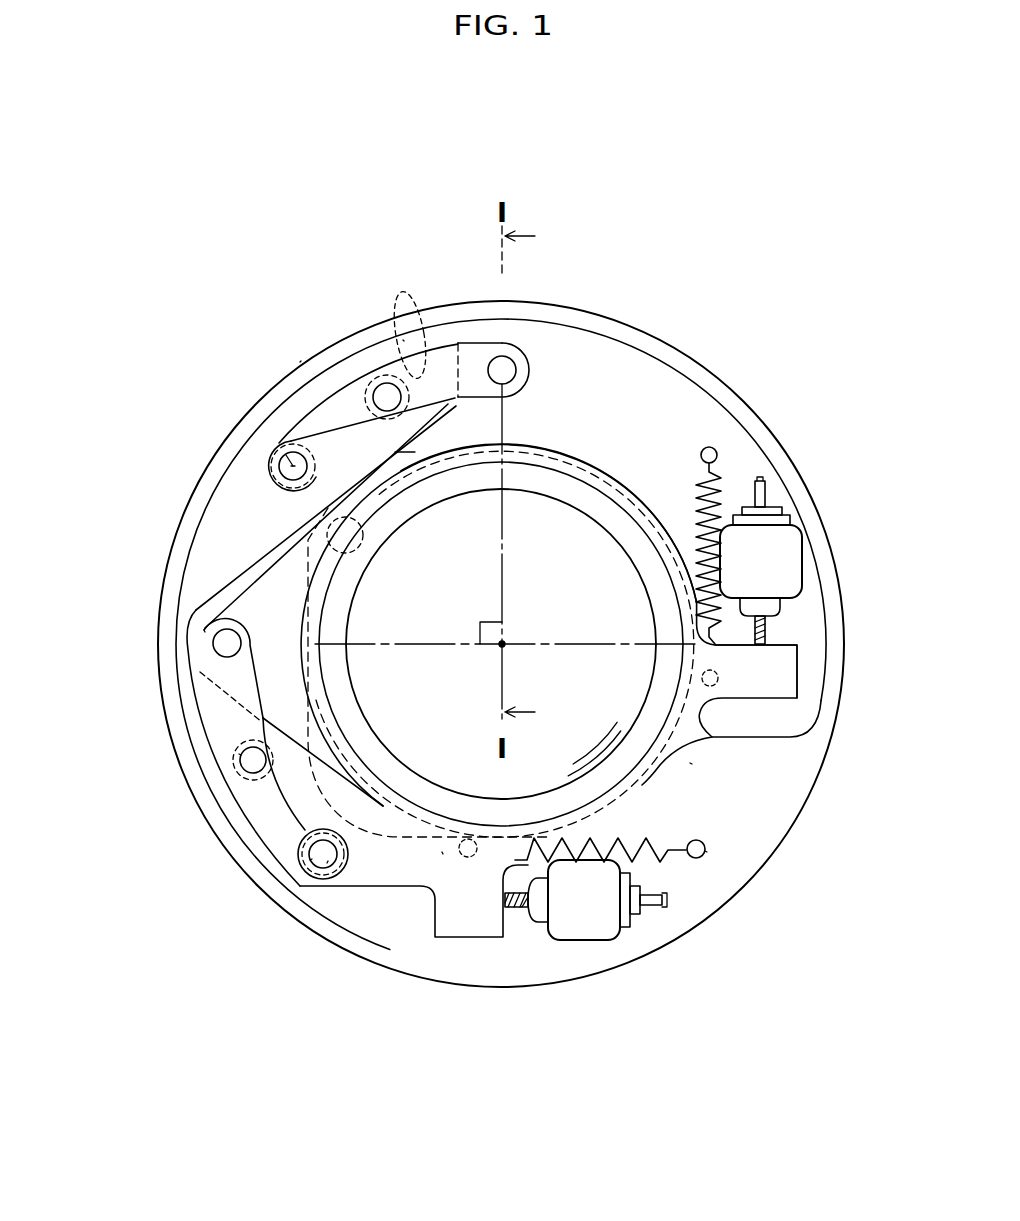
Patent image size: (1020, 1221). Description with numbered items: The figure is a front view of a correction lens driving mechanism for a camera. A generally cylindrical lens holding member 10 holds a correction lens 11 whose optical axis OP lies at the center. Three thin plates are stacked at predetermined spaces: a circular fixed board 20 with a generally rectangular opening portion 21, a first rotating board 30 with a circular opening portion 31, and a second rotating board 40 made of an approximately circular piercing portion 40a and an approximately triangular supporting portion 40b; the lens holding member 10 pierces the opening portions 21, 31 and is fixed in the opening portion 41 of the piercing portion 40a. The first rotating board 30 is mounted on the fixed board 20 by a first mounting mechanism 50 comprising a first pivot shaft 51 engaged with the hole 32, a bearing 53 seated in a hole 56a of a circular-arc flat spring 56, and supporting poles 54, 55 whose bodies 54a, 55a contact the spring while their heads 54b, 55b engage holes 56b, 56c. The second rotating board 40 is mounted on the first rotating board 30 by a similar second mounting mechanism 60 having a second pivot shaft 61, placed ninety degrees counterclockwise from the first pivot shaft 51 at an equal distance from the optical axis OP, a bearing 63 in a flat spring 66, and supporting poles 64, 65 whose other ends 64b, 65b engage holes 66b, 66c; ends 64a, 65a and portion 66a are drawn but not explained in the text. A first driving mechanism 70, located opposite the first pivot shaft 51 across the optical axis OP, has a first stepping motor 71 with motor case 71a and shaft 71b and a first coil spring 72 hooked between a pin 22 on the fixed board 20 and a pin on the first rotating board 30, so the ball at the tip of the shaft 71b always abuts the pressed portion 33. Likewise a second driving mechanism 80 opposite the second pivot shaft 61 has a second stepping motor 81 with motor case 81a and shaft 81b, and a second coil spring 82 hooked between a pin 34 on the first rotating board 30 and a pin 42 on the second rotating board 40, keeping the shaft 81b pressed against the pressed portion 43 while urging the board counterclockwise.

The lens holding member 10 is at (660, 356).
The correction lens 11 is at (580, 530).
The fixed board 20 is at (688, 352).
The opening portion 21 is at (690, 763).
The pin 22 is at (707, 852).
The first rotating board 30 is at (698, 365).
The opening portion 31 is at (323, 510).
The hole / pin 32 is at (443, 852).
The pressed portion 33 is at (472, 913).
The pin 34 is at (716, 450).
The second rotating board 40 is at (392, 830).
The piercing portion 40a is at (455, 858).
The supporting portion 40b is at (278, 553).
The opening portion 41 is at (540, 450).
The pin 42 is at (720, 683).
The pressed portion 43 is at (767, 672).
The first mounting mechanism 50 is at (350, 380).
The first pivot shaft 51 is at (480, 370).
The bearing 53 is at (528, 350).
The supporting pole 54 is at (323, 374).
The body 54a is at (428, 360).
The head 54b is at (403, 340).
The supporting pole 55 is at (278, 426).
The body 55a is at (297, 423).
The head 55b is at (293, 466).
The flat spring 56 is at (327, 437).
The hole 56a is at (495, 362).
The hole 56b is at (387, 385).
The hole 56c is at (286, 455).
The second mounting mechanism 60 is at (218, 803).
The second pivot shaft 61 is at (204, 631).
The bearing 63 is at (227, 640).
The supporting pole 64 is at (248, 796).
The pin 64a is at (232, 740).
The other end 64b is at (238, 755).
The supporting pole 65 is at (286, 860).
The hidden recess 65a is at (296, 868).
The other end 65b is at (310, 860).
The flat spring 66 is at (200, 713).
The lever arm 66a is at (203, 677).
The hole 66b is at (246, 800).
The hole 66c is at (327, 863).
The first driving mechanism 70 is at (686, 890).
The first stepping motor 71 is at (544, 956).
The motor case 71a is at (580, 941).
The shaft 71b is at (514, 908).
The first coil spring 72 is at (660, 838).
The second driving mechanism 80 is at (751, 466).
The second stepping motor 81 is at (815, 614).
The motor case 81a is at (803, 568).
The shaft 81b is at (768, 626).
The second coil spring 82 is at (700, 477).
The optical axis OP is at (503, 644).